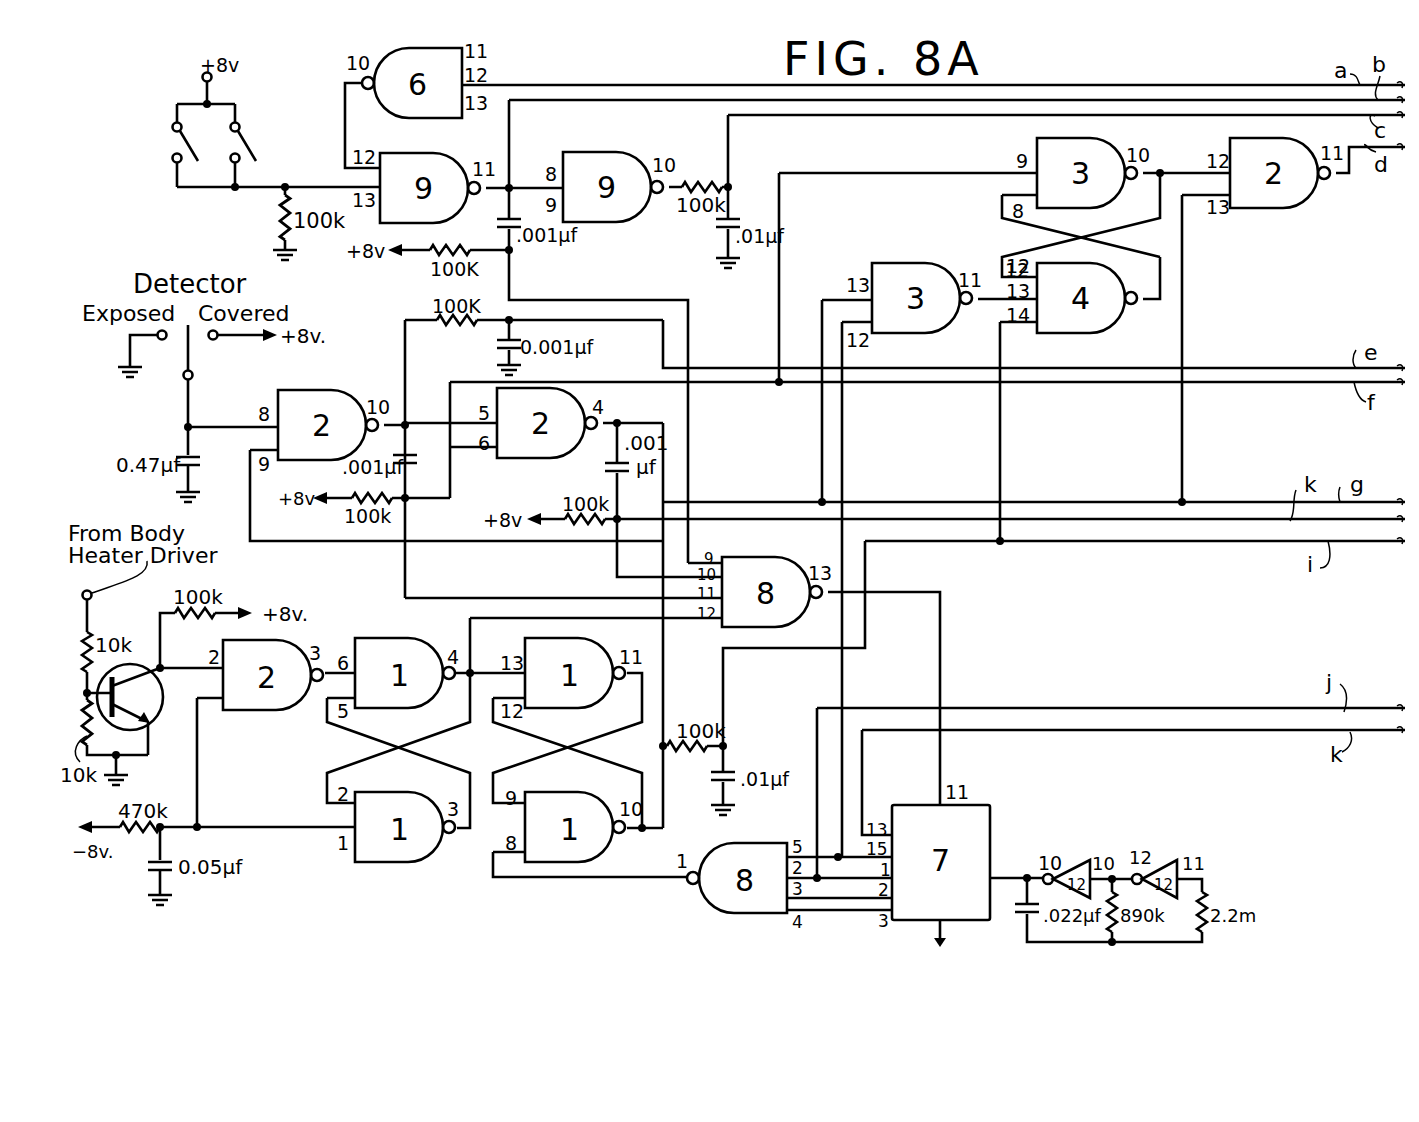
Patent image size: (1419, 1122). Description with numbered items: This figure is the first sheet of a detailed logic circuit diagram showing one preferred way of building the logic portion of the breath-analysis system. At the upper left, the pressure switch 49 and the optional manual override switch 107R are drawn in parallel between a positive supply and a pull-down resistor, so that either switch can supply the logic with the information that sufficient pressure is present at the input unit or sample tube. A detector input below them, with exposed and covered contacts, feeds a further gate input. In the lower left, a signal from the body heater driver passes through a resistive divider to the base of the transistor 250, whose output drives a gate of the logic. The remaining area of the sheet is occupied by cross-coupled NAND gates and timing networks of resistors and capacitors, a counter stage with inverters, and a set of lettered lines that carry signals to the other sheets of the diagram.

The pressure switch 49 is at (183, 146).
The manual override switch 107R is at (254, 153).
The transistor 250 is at (152, 724).